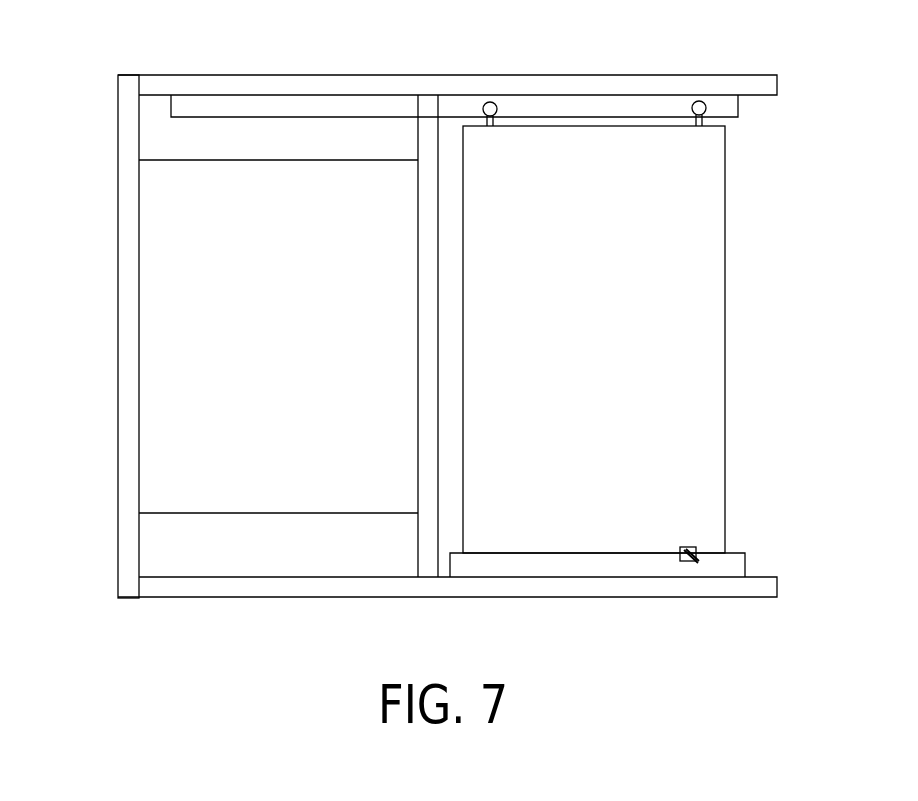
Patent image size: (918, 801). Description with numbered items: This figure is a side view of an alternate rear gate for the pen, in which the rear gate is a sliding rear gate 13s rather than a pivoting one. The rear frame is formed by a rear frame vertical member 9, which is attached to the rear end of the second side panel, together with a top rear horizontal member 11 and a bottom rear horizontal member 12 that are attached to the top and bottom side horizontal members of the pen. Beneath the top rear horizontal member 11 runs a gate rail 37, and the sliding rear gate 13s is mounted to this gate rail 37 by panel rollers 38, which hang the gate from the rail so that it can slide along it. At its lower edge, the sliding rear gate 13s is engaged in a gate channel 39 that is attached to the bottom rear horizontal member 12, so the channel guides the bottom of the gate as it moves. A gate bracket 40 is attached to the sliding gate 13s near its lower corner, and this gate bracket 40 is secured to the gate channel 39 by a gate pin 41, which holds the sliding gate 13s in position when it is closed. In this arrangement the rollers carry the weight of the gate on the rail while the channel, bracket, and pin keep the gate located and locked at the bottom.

The rear frame vertical member 9 is at (118, 421).
The top rear horizontal member 11 is at (654, 74).
The bottom rear horizontal member 12 is at (583, 598).
The sliding rear gate 13s is at (725, 337).
The gate rail 37 is at (188, 119).
The panel rollers 38 is at (694, 122).
The gate channel 39 is at (750, 560).
The gate bracket 40 is at (687, 548).
The gate pin 41 is at (695, 561).